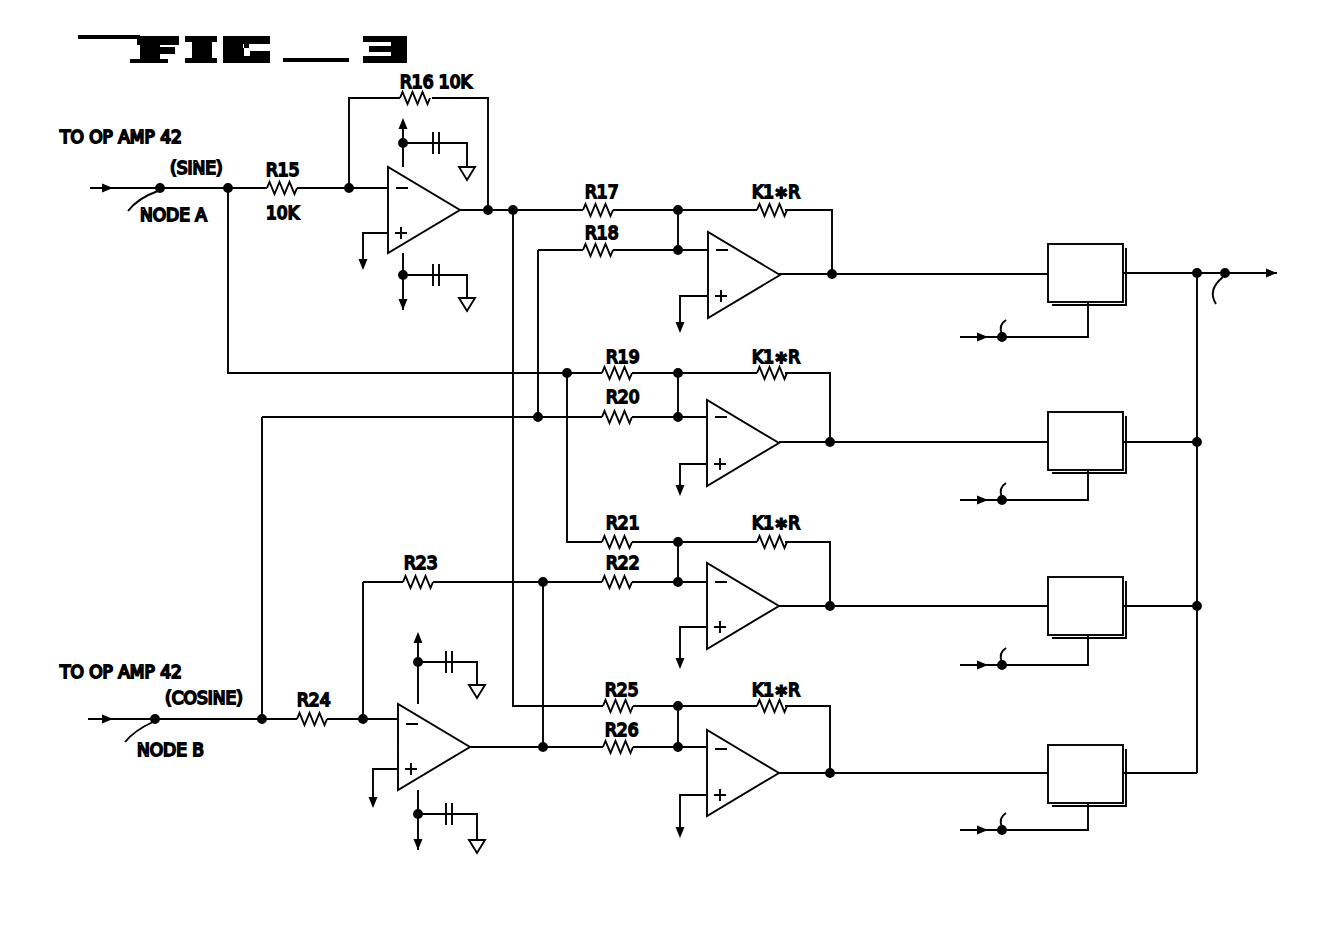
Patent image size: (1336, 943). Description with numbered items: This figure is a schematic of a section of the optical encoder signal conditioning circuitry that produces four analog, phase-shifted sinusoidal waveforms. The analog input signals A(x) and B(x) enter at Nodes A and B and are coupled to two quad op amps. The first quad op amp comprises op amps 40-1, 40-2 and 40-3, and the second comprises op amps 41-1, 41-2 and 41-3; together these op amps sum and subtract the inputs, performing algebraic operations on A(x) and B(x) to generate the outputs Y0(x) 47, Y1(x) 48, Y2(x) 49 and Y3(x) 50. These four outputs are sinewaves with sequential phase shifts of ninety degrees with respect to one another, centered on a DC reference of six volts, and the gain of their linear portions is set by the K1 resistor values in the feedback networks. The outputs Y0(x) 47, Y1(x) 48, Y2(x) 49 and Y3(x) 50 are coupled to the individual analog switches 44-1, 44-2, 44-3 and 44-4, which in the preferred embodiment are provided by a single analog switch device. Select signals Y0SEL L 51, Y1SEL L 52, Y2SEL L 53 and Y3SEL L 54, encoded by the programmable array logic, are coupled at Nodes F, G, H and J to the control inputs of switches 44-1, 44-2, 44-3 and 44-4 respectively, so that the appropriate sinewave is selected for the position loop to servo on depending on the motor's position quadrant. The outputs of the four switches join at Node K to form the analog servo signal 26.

The op amp 40-1 is at (428, 224).
The op amp 40-2 is at (739, 297).
The op amp 40-3 is at (739, 465).
The op amp 41-1 is at (458, 760).
The op amp 41-2 is at (739, 628).
The op amp 41-3 is at (742, 796).
The analog switch 44-1 is at (1121, 303).
The analog switch 44-2 is at (1110, 471).
The analog switch 44-3 is at (1108, 636).
The analog switch 44-4 is at (1110, 804).
The Y0(x) output signal 47 is at (937, 274).
The Y1(x) output signal 48 is at (939, 442).
The Y2(x) output signal 49 is at (936, 606).
The Y3(x) output signal 50 is at (936, 773).
The Y0SEL L select signal 51 is at (992, 341).
The Y1SEL L select signal 52 is at (992, 504).
The Y2SEL L select signal 53 is at (992, 668).
The Y3SEL L select signal 54 is at (992, 833).
The analog servo signal 26 is at (1244, 270).